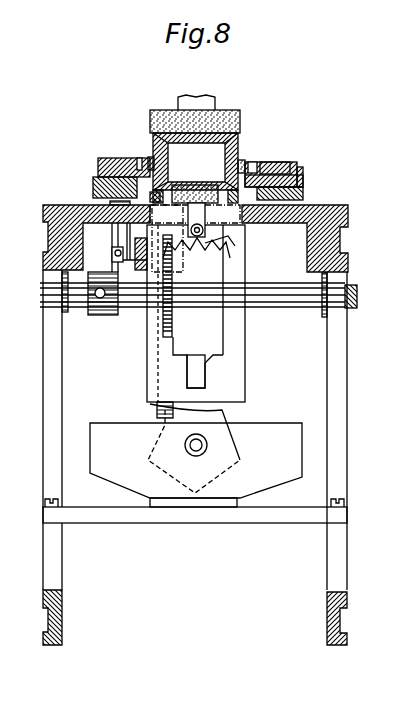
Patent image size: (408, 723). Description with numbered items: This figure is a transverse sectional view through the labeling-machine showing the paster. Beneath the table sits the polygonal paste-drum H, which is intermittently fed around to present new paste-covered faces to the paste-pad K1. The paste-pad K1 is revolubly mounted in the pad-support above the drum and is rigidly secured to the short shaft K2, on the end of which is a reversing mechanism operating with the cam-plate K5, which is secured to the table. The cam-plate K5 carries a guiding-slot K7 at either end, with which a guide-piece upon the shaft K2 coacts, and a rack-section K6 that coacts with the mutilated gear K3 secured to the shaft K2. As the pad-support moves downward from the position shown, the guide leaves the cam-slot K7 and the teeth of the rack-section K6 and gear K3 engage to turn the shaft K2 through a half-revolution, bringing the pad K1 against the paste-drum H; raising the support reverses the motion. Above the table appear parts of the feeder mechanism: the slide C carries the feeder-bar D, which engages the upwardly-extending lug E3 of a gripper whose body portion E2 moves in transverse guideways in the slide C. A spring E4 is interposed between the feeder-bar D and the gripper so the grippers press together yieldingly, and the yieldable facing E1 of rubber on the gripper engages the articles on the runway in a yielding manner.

The yieldable facing E1 is at (242, 164).
The body portion E2 is at (303, 173).
The upwardly-extending lug E3 is at (300, 167).
The spring E4 is at (255, 163).
The feeder-bar D is at (284, 162).
The slide C is at (303, 194).
The paste-pad K1 is at (215, 224).
The short shaft K2 is at (220, 246).
The mutilated gear K3 is at (200, 250).
The cam-plate K5 is at (245, 329).
The rack-section K6 is at (172, 318).
The guiding-slot K7 is at (190, 372).
The paste-drum H is at (225, 418).